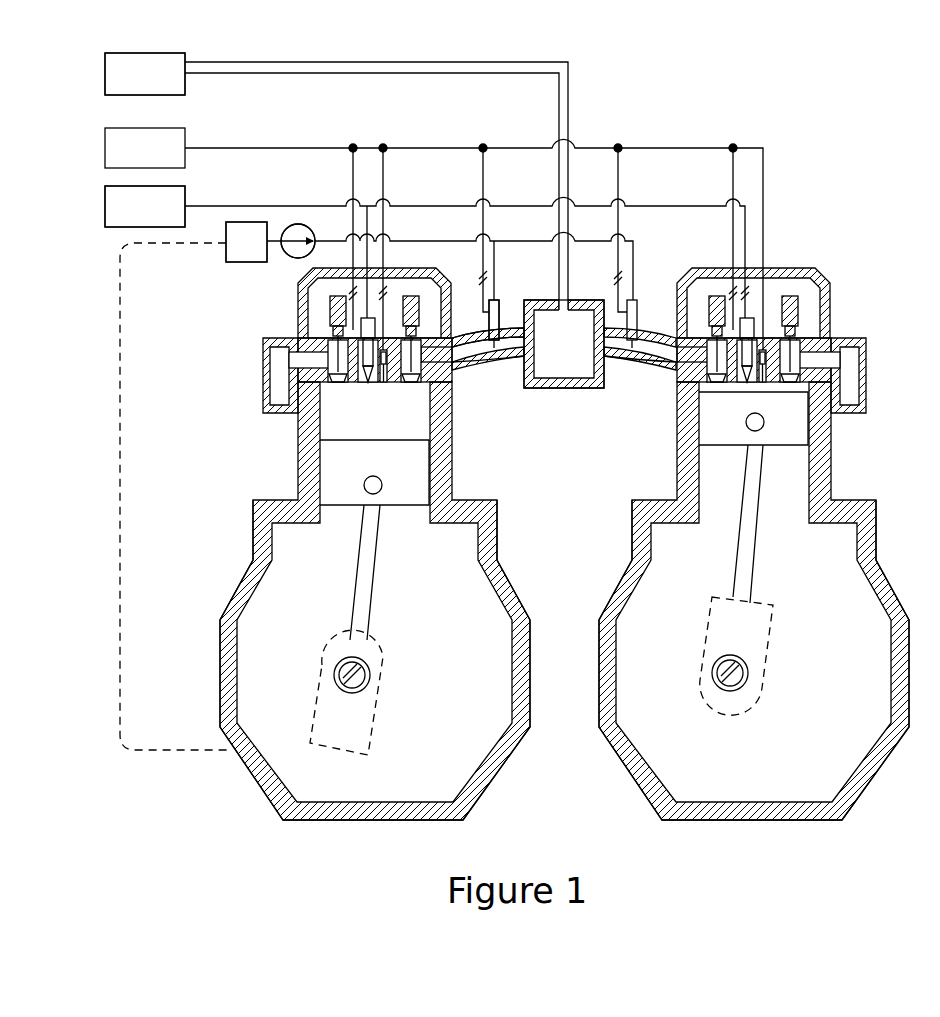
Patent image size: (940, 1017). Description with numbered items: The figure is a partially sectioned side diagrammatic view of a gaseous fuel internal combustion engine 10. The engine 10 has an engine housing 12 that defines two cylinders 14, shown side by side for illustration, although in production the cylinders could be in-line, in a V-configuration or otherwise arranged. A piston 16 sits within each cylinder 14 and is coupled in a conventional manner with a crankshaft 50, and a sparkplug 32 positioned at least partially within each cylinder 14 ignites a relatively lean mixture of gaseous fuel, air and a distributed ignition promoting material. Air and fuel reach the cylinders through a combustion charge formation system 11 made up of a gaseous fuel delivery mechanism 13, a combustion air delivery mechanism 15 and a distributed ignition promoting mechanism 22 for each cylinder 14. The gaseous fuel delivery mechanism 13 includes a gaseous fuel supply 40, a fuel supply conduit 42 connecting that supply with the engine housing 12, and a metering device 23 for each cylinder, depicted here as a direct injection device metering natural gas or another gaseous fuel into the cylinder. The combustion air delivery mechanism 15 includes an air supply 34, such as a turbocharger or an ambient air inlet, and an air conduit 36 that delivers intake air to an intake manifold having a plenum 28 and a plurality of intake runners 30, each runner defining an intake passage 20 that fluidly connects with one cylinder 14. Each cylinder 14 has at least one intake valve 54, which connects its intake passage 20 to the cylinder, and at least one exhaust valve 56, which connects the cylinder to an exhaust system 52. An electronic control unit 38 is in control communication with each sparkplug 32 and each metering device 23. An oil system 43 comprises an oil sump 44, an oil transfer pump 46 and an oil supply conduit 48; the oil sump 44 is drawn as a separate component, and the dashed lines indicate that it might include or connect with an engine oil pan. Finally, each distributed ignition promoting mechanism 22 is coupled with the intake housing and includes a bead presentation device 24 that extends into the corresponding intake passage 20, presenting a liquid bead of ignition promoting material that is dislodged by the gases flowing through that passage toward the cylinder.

The gaseous fuel internal combustion engine 10 is at (834, 158).
The combustion charge formation system 11 is at (466, 235).
The engine housing 12 is at (251, 539).
The gaseous fuel delivery mechanism 13 is at (98, 193).
The cylinder 14 is at (312, 426).
The combustion air delivery mechanism 15 is at (98, 62).
The piston 16 is at (320, 472).
The intake passage 20 is at (512, 368).
The distributed ignition promoting mechanism 22 is at (494, 301).
The metering device 23 is at (360, 384).
The bead presentation device 24 is at (492, 342).
The plenum 28 is at (581, 380).
The intake runner 30 is at (470, 366).
The sparkplug 32 is at (375, 406).
The air supply 34 is at (105, 88).
The air conduit 36 is at (434, 66).
The electronic control unit 38 is at (105, 159).
The gaseous fuel supply 40 is at (105, 217).
The fuel supply conduit 42 is at (213, 206).
The oil system 43 is at (240, 266).
The oil sump 44 is at (226, 253).
The oil transfer pump 46 is at (288, 260).
The oil supply conduit 48 is at (472, 242).
The crankshaft 50 is at (370, 681).
The exhaust system 52 is at (264, 353).
The intake valve 54 is at (394, 384).
The exhaust valve 56 is at (280, 391).